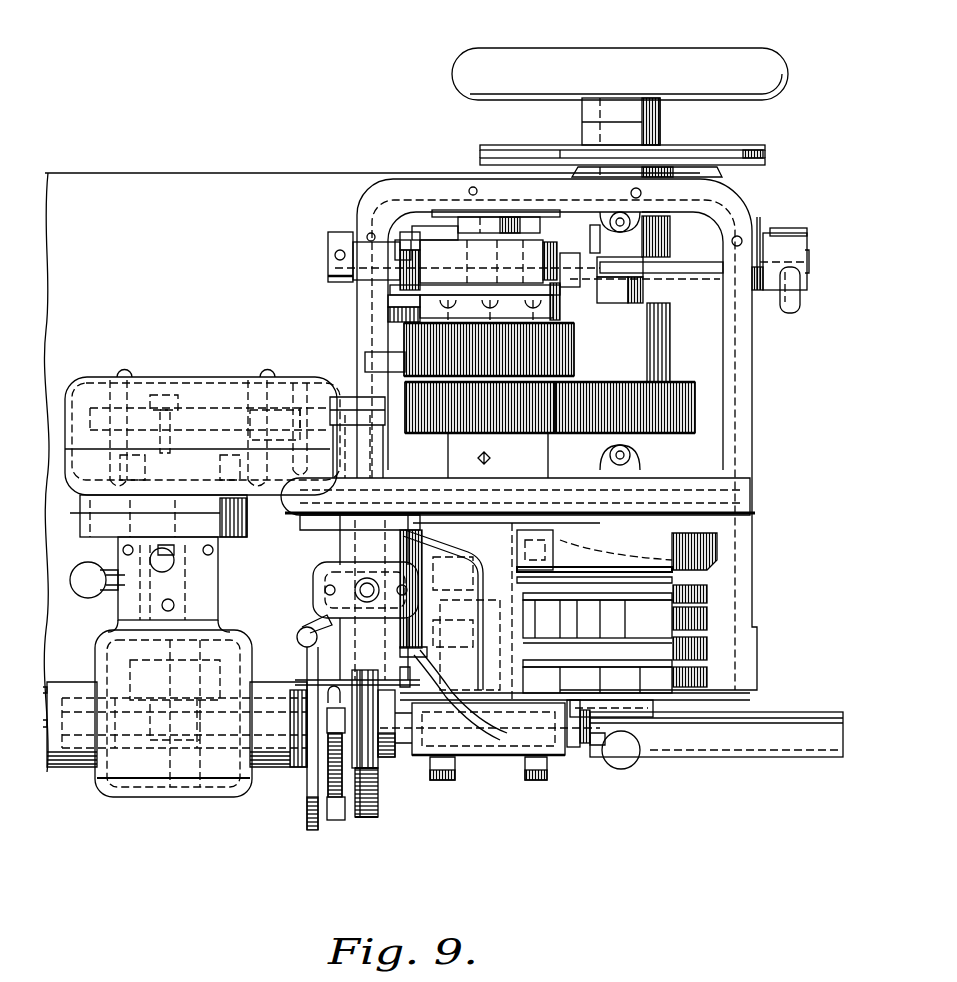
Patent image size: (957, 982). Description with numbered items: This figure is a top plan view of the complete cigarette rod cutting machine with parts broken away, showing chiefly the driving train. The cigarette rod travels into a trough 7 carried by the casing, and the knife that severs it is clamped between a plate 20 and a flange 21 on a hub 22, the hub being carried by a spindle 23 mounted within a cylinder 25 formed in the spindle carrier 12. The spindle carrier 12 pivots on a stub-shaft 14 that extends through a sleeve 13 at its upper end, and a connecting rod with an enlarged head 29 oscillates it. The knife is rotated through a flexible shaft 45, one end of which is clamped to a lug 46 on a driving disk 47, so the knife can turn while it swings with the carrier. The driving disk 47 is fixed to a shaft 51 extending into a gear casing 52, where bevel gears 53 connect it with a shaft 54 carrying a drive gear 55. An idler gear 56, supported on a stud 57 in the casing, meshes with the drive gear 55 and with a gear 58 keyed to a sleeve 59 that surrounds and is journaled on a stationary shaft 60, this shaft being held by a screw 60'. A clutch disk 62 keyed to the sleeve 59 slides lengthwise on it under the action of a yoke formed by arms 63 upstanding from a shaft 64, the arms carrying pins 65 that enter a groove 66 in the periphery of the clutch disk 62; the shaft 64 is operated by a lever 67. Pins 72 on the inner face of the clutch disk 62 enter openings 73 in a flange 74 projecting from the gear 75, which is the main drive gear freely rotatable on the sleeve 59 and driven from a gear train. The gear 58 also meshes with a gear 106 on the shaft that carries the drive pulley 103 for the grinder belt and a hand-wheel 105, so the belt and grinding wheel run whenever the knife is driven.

The hand-wheel 105 is at (735, 55).
The drive pulley 103 is at (742, 152).
The stationary shaft 60 is at (557, 403).
The screw 60' is at (518, 511).
The pins 65 is at (396, 252).
The groove 66 is at (525, 235).
The clutch disk 62 is at (432, 240).
The arms 63 is at (400, 245).
The shaft 64 is at (707, 258).
The lever 67 is at (790, 303).
The idler gear 56 is at (643, 290).
The flange 74 is at (420, 300).
The openings 73 is at (400, 300).
The pins 72 is at (390, 318).
The gear 75 is at (410, 345).
The stub-shaft 14 is at (400, 368).
The gear 106 is at (677, 400).
The gear 58 is at (455, 432).
The sleeve 59 is at (470, 466).
The drive gear 55 is at (197, 393).
The shaft 54 is at (157, 393).
The stud 57 is at (303, 397).
The sleeve 13 is at (327, 558).
The bevel gears 53 is at (220, 637).
The shaft 51 is at (223, 630).
The gear casing 52 is at (175, 765).
The driving disk 47 is at (313, 773).
The lug 46 is at (335, 817).
The flexible shaft 45 is at (378, 797).
The flange 21 is at (380, 813).
The plate 20 is at (360, 817).
The hub 22 is at (397, 750).
The cylinder 25 is at (500, 737).
The spindle carrier 12 is at (432, 673).
The enlarged head 29 is at (703, 623).
The spindle 23 is at (597, 733).
The trough 7 is at (730, 737).